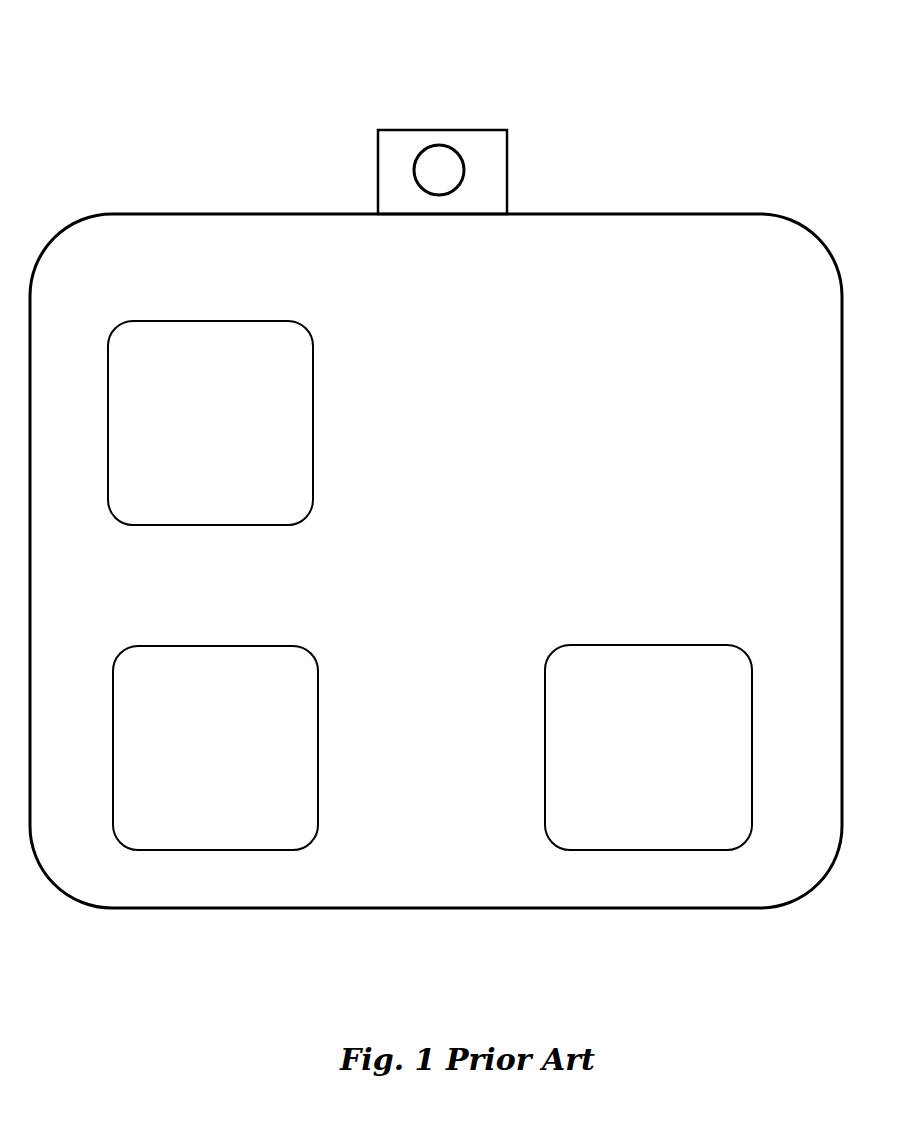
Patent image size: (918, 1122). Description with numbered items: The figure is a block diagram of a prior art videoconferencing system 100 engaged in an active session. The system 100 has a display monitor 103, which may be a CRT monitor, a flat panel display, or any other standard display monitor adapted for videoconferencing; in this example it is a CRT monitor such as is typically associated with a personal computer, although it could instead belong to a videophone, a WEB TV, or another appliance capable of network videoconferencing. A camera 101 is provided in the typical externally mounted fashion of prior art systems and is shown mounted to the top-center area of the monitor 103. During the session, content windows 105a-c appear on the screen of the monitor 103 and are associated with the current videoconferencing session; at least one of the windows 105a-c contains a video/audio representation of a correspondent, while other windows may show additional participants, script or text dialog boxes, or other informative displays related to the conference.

The videoconferencing system 100 is at (436, 464).
The camera 101 is at (477, 168).
The display monitor 103 is at (571, 203).
The content windows 105a-c is at (500, 519).